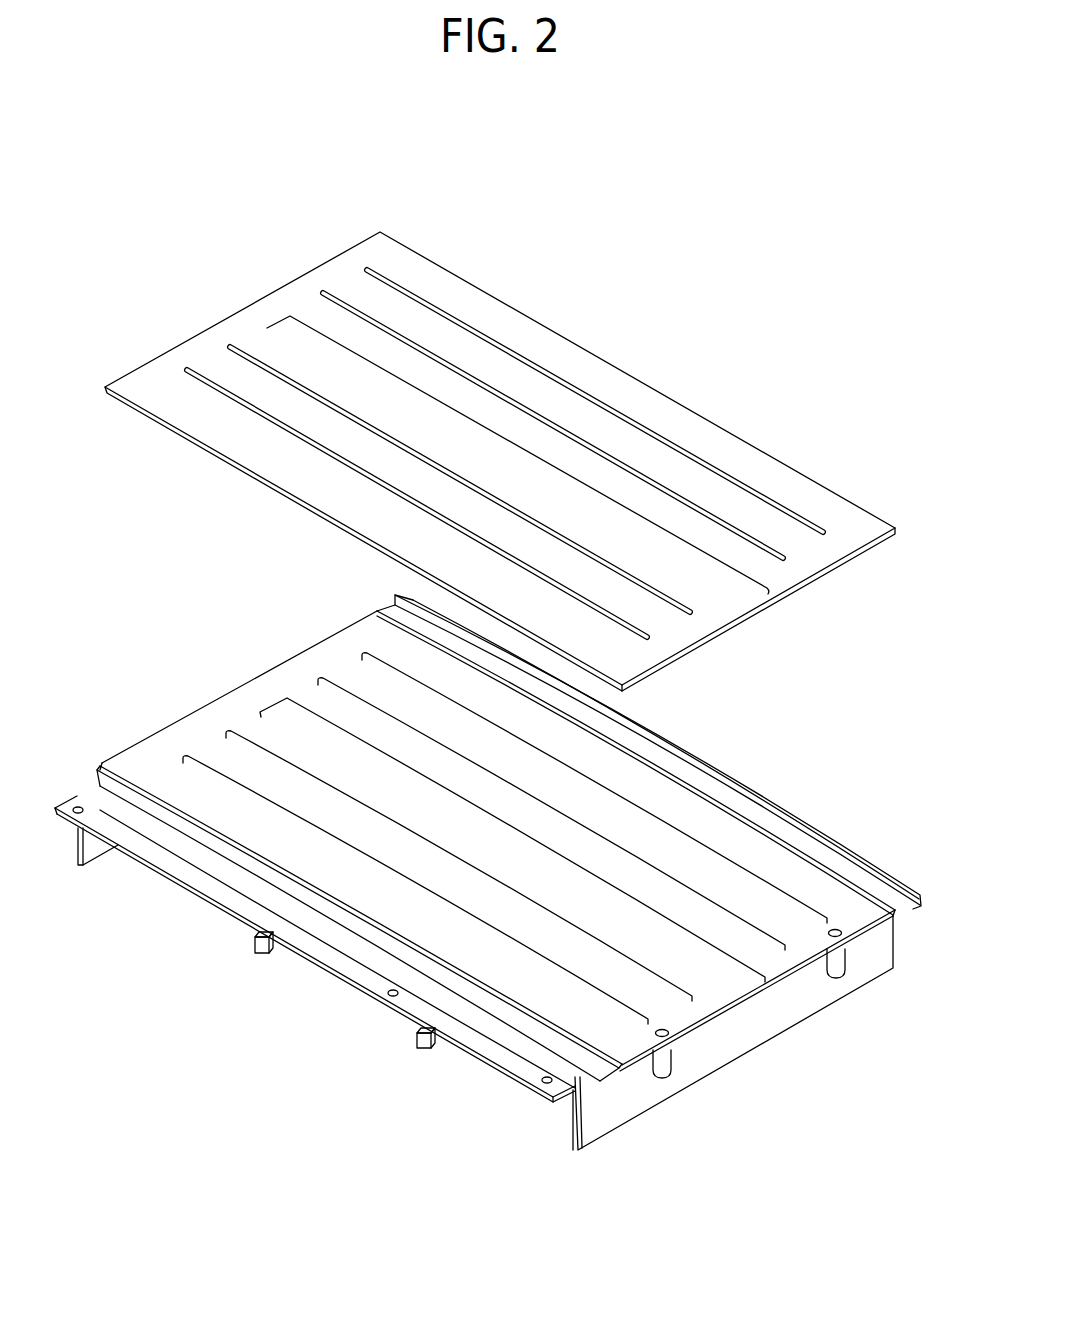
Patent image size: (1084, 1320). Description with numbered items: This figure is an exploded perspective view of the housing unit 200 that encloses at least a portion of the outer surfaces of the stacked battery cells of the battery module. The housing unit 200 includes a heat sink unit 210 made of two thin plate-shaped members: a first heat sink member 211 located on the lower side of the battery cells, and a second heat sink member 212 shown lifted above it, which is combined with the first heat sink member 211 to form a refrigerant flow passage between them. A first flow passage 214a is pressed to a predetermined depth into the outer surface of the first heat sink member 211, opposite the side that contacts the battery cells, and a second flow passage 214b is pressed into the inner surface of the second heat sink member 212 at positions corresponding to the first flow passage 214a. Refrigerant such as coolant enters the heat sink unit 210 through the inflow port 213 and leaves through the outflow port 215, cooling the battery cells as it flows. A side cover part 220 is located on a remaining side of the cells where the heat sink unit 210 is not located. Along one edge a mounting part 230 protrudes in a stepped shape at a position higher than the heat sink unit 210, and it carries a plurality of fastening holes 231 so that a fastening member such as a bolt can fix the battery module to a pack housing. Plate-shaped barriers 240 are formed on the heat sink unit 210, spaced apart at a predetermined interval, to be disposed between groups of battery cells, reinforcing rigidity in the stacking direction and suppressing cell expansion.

The housing unit 200 is at (113, 140).
The heat sink unit 210 is at (882, 657).
The first heat sink member 211 is at (509, 877).
The second heat sink member 212 is at (500, 461).
The inflow port 213 is at (837, 977).
The first flow passage 214a is at (300, 683).
The second flow passage 214b is at (593, 368).
The outflow port 215 is at (662, 1080).
The side cover part 220 is at (757, 1037).
The mounting part 230 is at (315, 973).
The fastening hole 231 is at (393, 1000).
The barrier 240 is at (423, 1047).